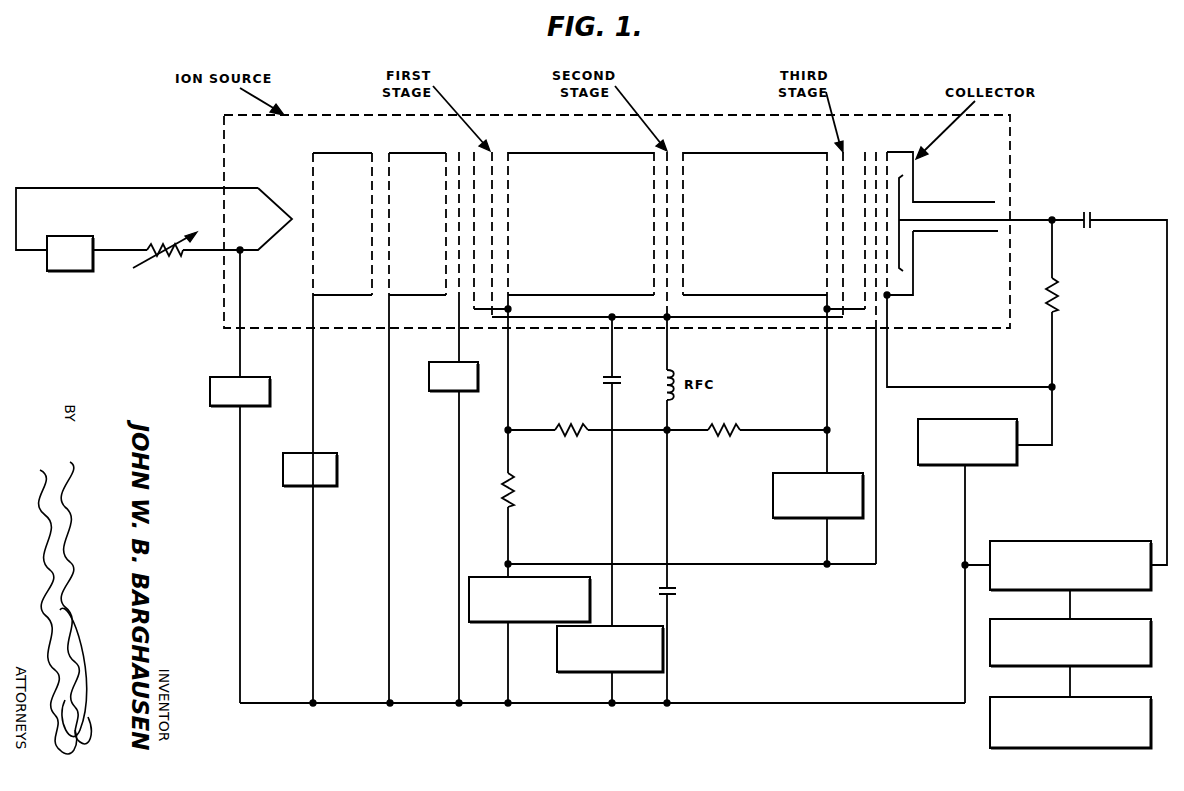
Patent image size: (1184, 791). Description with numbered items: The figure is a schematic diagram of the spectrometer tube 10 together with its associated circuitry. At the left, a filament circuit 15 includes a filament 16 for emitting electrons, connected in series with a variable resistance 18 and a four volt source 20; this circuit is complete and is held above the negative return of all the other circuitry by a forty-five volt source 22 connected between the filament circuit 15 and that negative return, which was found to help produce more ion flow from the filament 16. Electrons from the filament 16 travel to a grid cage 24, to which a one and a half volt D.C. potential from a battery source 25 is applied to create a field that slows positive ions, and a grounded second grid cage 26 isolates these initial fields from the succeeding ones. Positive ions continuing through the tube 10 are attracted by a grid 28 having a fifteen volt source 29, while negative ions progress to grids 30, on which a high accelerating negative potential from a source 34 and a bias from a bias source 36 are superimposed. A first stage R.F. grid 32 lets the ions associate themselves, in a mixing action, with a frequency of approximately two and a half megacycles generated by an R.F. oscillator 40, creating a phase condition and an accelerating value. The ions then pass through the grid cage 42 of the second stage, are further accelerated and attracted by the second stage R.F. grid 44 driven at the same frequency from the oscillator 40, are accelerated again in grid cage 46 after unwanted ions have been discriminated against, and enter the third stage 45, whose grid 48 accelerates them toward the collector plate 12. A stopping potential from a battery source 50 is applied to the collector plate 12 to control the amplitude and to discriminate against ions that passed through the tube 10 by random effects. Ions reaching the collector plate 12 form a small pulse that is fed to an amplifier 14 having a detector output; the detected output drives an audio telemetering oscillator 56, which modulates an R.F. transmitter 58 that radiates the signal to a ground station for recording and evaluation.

The spectrometer tube 10 is at (860, 115).
The collector plate 12 is at (940, 139).
The amplifier 14 is at (1096, 541).
The filament circuit 15 is at (113, 187).
The filament 16 is at (260, 187).
The variable resistance 18 is at (166, 256).
The four volt source 20 is at (72, 272).
The 45 volt source 22 is at (258, 407).
The grid cage 24 is at (337, 152).
The battery source 25 is at (333, 453).
The grounded second grid cage 26 is at (391, 152).
The grid 28 is at (459, 152).
The 15 volt source 29 is at (437, 392).
The grids 30 is at (474, 152).
The first stage R.F. grid 32 is at (492, 152).
The accelerating potential source 34 is at (491, 577).
The bias source 36 is at (792, 473).
The R.F. oscillator 40 is at (637, 626).
The grid cage of the second stage 42 is at (580, 152).
The R.F. grid of the second stage 44 is at (667, 152).
The third stage 45 is at (843, 152).
The grid cage 46 is at (754, 152).
The grid of the third stage 48 is at (876, 152).
The battery source 50 is at (918, 428).
The audio telemetering oscillator 56 is at (1088, 619).
The R.F. transmitter 58 is at (1090, 697).